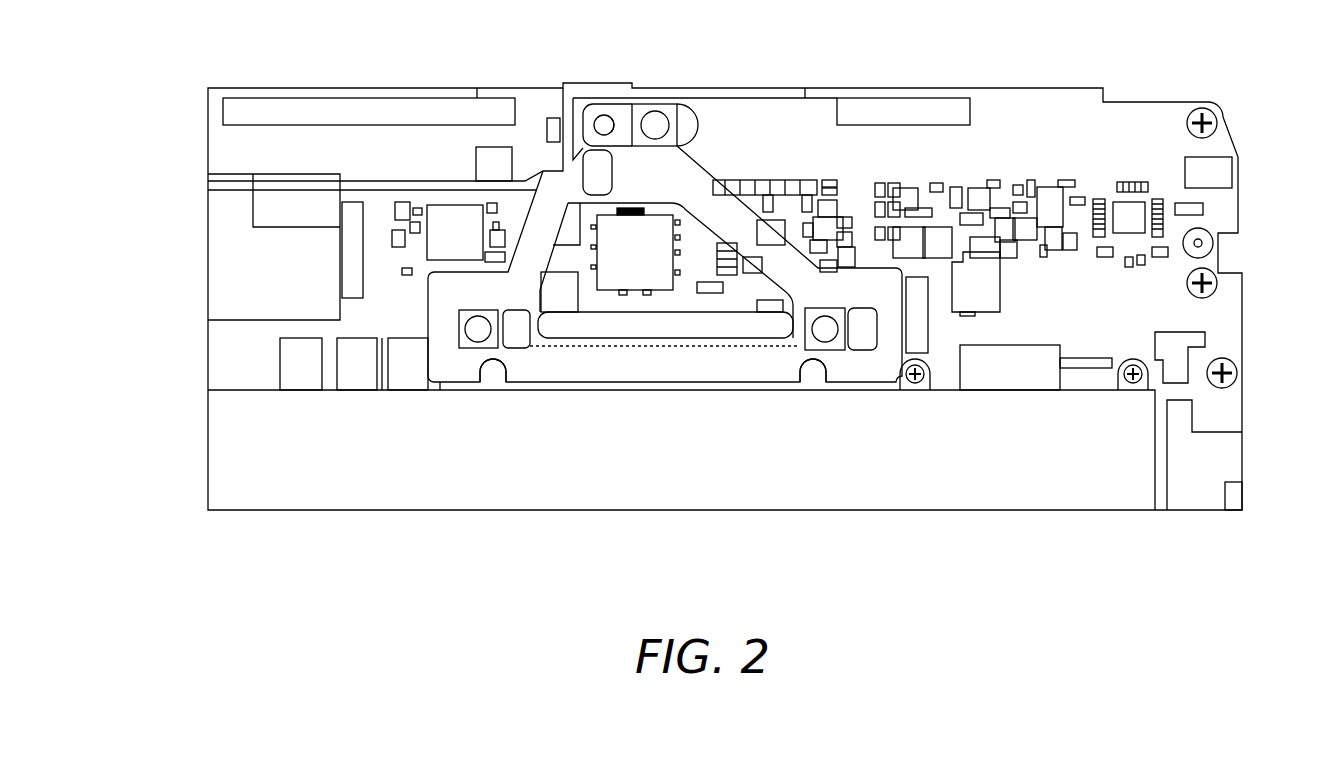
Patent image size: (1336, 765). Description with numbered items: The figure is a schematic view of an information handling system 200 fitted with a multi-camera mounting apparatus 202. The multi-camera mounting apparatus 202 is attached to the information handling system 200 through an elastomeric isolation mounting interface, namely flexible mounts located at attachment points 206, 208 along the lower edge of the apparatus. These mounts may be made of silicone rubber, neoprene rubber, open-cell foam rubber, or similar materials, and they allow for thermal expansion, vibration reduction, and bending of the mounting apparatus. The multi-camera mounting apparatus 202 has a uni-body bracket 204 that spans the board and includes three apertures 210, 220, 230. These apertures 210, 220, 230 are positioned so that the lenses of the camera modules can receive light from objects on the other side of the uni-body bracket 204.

The information handling system 200 is at (1145, 168).
The multi-camera mounting apparatus 202 is at (885, 262).
The uni-body bracket 204 is at (523, 216).
The attachment point 206 is at (475, 368).
The attachment point 208 is at (840, 372).
The aperture 210 is at (647, 112).
The aperture 220 is at (852, 326).
The aperture 230 is at (460, 327).